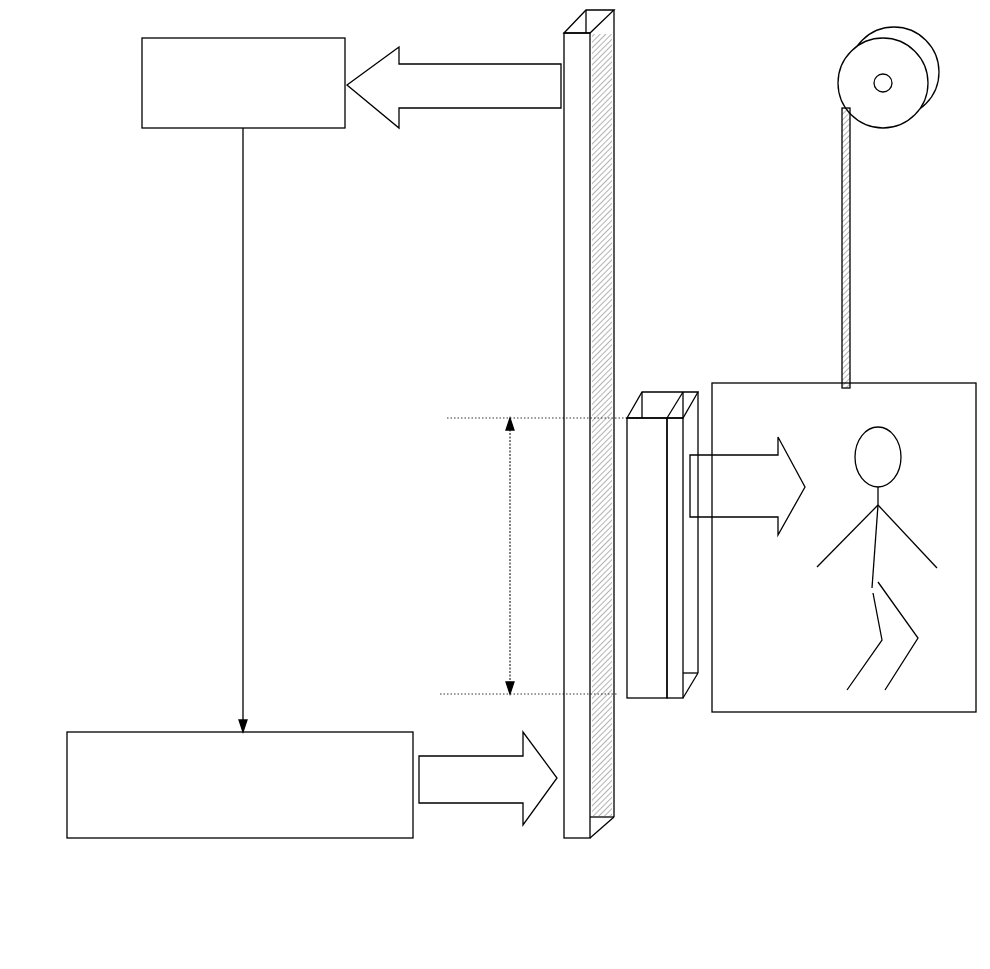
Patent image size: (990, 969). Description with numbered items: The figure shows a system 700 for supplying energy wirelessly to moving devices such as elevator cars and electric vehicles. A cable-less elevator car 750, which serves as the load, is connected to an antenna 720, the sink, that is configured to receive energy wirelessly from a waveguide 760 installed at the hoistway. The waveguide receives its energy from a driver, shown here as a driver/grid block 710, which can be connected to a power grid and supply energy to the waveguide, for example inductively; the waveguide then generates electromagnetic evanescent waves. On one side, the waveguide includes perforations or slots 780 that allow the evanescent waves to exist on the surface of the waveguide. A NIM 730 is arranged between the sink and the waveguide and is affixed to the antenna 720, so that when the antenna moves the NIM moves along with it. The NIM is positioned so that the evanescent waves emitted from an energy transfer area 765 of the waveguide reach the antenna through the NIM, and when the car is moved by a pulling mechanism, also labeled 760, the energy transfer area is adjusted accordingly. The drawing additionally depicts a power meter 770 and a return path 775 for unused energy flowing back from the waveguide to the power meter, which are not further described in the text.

The system 700 is at (528, 424).
The driver/grid 710 is at (312, 731).
The antenna 720 is at (692, 402).
The NIM 730 is at (638, 390).
The cable-less elevator car 750 is at (925, 380).
The waveguide 760 is at (688, 424).
The energy transfer area 765 is at (510, 508).
The power meter 770 is at (147, 107).
The unused energy return path 775 is at (392, 117).
The perforations or slots 780 is at (597, 215).